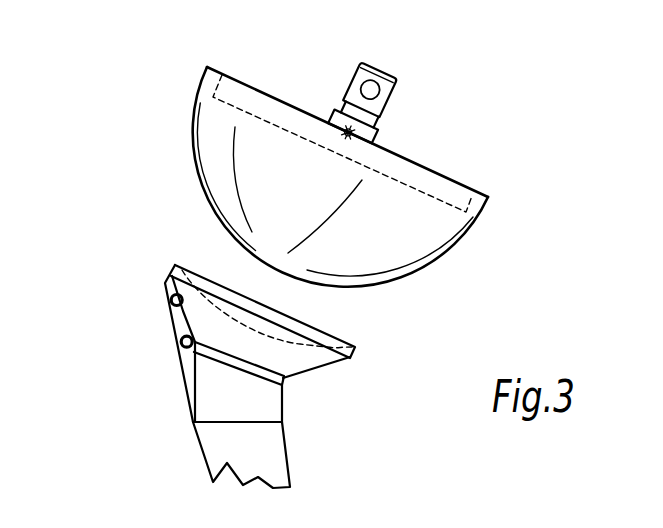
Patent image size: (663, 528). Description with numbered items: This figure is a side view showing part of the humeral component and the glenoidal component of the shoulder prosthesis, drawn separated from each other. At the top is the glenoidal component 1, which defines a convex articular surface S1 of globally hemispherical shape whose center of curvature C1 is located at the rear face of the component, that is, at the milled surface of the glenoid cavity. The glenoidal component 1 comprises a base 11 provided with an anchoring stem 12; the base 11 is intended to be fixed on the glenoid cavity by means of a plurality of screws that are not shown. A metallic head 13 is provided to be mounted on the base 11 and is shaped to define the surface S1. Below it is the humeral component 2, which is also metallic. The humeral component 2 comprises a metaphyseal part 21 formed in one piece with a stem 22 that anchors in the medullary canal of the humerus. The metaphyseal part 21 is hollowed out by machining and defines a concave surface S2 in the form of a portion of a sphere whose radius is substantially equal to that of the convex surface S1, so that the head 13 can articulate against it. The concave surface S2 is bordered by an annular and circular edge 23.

The glenoidal component 1 is at (178, 80).
The base 11 is at (423, 162).
The anchoring stem 12 is at (363, 72).
The metallic head 13 is at (310, 185).
The center of curvature C1 is at (362, 115).
The convex articular surface S1 is at (463, 281).
The humeral component 2 is at (148, 283).
The metaphyseal part 21 is at (227, 385).
The stem 22 is at (220, 443).
The annular and circular edge 23 is at (212, 278).
The concave surface S2 is at (292, 338).